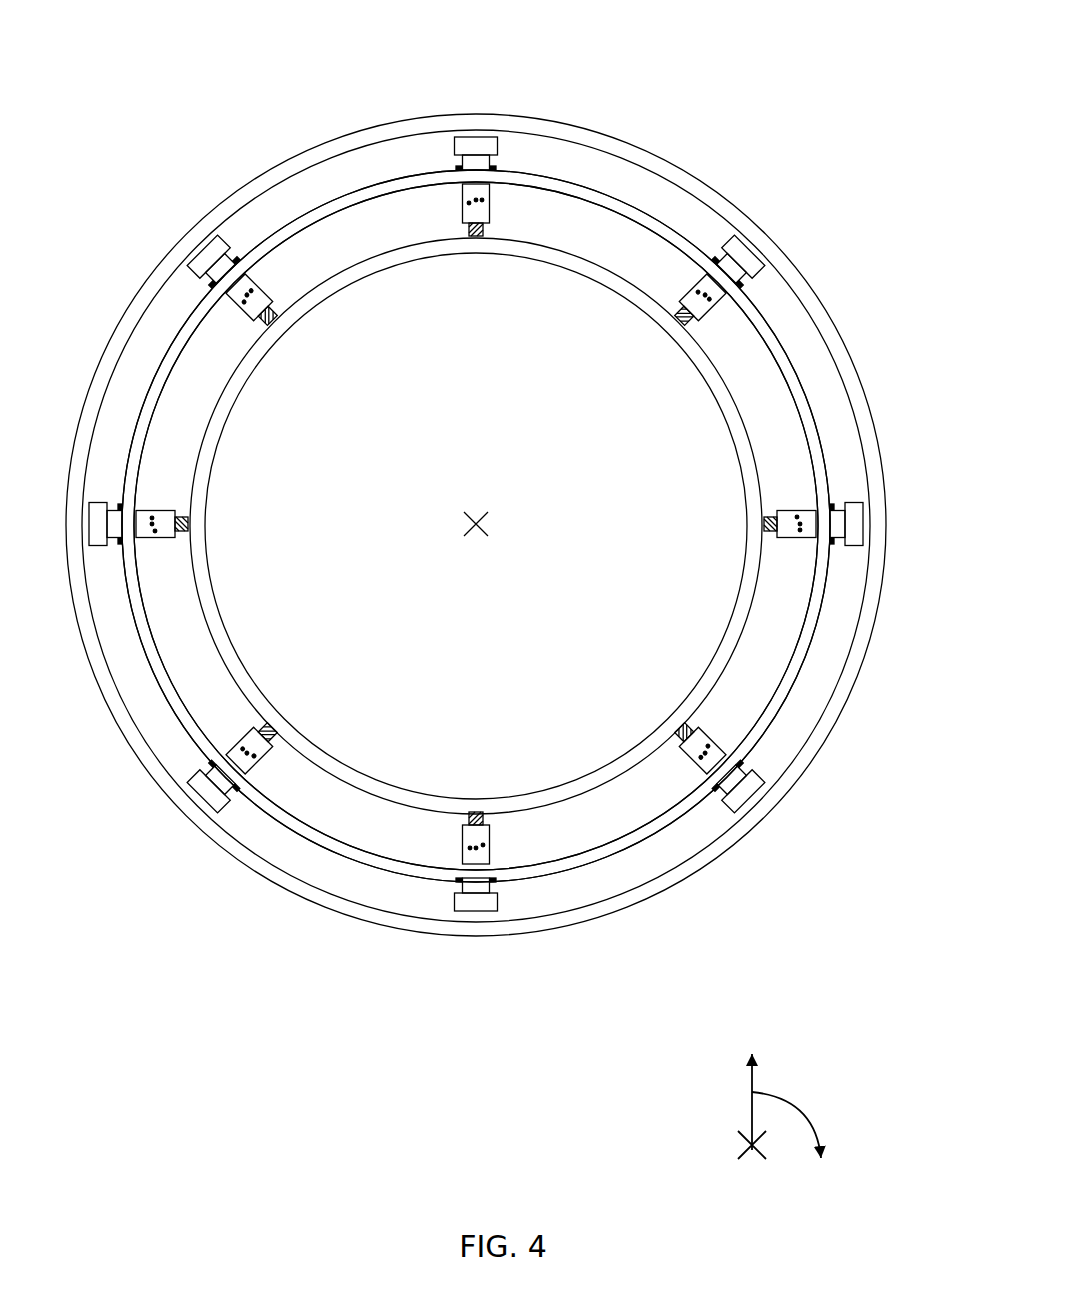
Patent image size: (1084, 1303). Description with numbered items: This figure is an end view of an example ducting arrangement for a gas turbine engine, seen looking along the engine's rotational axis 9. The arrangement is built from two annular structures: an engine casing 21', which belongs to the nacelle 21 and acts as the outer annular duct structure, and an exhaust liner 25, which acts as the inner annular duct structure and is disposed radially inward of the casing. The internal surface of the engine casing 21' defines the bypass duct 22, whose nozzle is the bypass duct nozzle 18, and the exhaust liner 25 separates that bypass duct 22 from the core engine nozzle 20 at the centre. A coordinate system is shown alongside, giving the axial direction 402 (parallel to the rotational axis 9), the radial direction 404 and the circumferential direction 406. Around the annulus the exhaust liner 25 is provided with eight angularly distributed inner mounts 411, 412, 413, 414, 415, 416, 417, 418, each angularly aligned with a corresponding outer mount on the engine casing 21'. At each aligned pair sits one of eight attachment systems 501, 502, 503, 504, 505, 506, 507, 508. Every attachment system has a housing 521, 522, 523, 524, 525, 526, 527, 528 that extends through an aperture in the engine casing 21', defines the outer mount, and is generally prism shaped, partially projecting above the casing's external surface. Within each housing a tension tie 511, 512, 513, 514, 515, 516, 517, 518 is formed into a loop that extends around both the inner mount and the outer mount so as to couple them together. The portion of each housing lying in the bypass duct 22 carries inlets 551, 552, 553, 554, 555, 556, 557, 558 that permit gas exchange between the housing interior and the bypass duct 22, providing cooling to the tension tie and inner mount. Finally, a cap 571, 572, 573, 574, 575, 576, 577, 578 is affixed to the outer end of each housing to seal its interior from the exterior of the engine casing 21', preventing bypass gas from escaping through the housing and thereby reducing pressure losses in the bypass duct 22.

The rotational axis 9 is at (466, 518).
The bypass duct nozzle 18 is at (545, 243).
The core engine nozzle 20 is at (532, 400).
The nacelle 21 is at (476, 472).
The engine casing 21' is at (476, 501).
The bypass duct 22 is at (476, 526).
The exhaust liner 25 is at (730, 415).
The axial direction 402 is at (740, 1148).
The radial direction 404 is at (755, 1073).
The circumferential direction 406 is at (820, 1132).
The inner mount 411 is at (486, 238).
The inner mount 412 is at (692, 325).
The inner mount 413 is at (770, 530).
The inner mount 414 is at (678, 735).
The inner mount 415 is at (468, 812).
The inner mount 416 is at (268, 728).
The inner mount 417 is at (188, 522).
The inner mount 418 is at (276, 314).
The attachment system 501 is at (438, 161).
The attachment system 502 is at (766, 289).
The attachment system 503 is at (847, 490).
The attachment system 504 is at (764, 766).
The attachment system 505 is at (512, 890).
The attachment system 506 is at (240, 824).
The attachment system 507 is at (104, 495).
The attachment system 508 is at (238, 242).
The tension tie 511 is at (470, 232).
The tension tie 512 is at (680, 316).
The tension tie 513 is at (762, 520).
The tension tie 514 is at (688, 728).
The tension tie 515 is at (484, 812).
The tension tie 516 is at (274, 738).
The tension tie 517 is at (188, 530).
The tension tie 518 is at (266, 322).
The housing 521 is at (470, 207).
The housing 522 is at (694, 300).
The housing 523 is at (798, 515).
The housing 524 is at (712, 745).
The housing 525 is at (488, 838).
The housing 526 is at (250, 762).
The housing 527 is at (152, 545).
The housing 528 is at (245, 310).
The inlet 551 is at (484, 199).
The inlet 552 is at (706, 300).
The inlet 553 is at (800, 538).
The inlet 554 is at (698, 758).
The inlet 555 is at (470, 846).
The inlet 556 is at (245, 748).
The inlet 557 is at (158, 518).
The inlet 558 is at (252, 292).
The cap 571 is at (472, 146).
The cap 572 is at (735, 262).
The cap 573 is at (862, 520).
The cap 574 is at (752, 790).
The cap 575 is at (476, 906).
The cap 576 is at (210, 798).
The cap 577 is at (97, 546).
The cap 578 is at (200, 262).